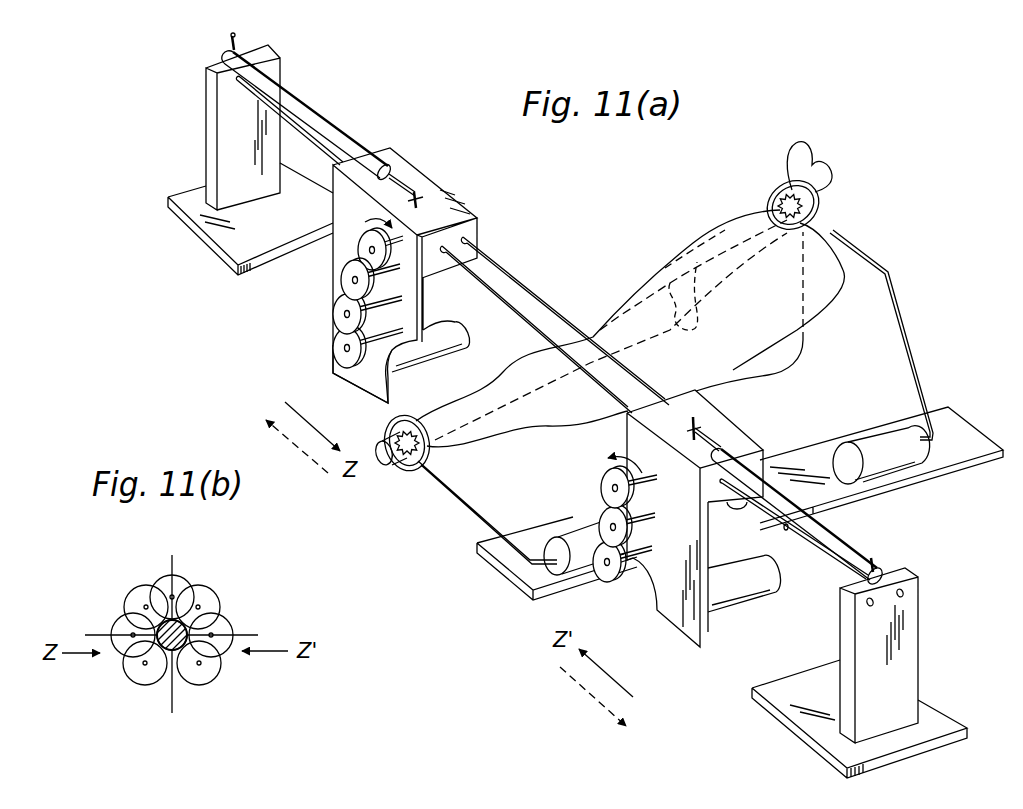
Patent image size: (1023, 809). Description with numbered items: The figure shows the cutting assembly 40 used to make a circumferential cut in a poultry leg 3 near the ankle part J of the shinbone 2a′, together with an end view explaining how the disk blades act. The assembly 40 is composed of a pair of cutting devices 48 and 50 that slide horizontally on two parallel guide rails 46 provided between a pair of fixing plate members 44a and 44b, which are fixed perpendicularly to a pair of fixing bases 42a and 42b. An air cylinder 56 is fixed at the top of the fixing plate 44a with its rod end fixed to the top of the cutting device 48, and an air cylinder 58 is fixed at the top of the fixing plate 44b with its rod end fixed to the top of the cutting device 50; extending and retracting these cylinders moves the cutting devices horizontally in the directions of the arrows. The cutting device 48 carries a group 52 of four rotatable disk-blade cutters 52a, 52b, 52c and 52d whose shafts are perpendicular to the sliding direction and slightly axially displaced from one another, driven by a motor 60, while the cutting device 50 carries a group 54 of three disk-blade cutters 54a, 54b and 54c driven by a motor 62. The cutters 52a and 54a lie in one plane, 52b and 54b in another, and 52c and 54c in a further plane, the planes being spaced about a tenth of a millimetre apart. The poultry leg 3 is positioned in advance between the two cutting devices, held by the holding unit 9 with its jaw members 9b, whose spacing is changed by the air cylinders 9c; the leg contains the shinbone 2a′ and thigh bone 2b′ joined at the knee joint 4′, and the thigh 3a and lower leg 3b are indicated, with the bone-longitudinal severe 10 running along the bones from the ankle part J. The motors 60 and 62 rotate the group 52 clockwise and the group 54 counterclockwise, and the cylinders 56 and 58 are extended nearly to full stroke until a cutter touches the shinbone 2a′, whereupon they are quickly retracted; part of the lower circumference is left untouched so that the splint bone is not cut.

In FIG. 11A, the cutting assembly 40 is at (482, 194).
In FIG. 11A, the fixing base 42a is at (257, 245).
In FIG. 11A, the fixing base 42b is at (777, 690).
In FIG. 11A, the fixing plate member 44a is at (206, 130).
In FIG. 11A, the fixing plate member 44b is at (910, 622).
In FIG. 11A, the guide rails 46 is at (517, 312).
In FIG. 11A, the cutting device 48 is at (355, 376).
In FIG. 11A, the cutting device 50 is at (678, 622).
In FIG. 11A, the disk-blade cutter group 52 is at (336, 293).
In FIG. 11B, the disk-blade cutter group 52 is at (106, 596).
In FIG. 11A, the disk-blade cutter 52a is at (363, 242).
In FIG. 11B, the disk-blade cutter 52a is at (130, 671).
In FIG. 11A, the disk-blade cutter 52b is at (338, 315).
In FIG. 11B, the disk-blade cutter 52b is at (115, 627).
In FIG. 11A, the disk-blade cutter 52c is at (342, 278).
In FIG. 11B, the disk-blade cutter 52c is at (135, 592).
In FIG. 11B, the disk-blade cutter 52d is at (160, 575).
In FIG. 11A, the disk-blade cutter group 54 is at (599, 483).
In FIG. 11B, the disk-blade cutter group 54 is at (239, 628).
In FIG. 11A, the disk-blade cutter 54a is at (610, 574).
In FIG. 11B, the disk-blade cutter 54a is at (207, 673).
In FIG. 11A, the disk-blade cutter 54b is at (628, 532).
In FIG. 11B, the disk-blade cutter 54b is at (222, 617).
In FIG. 11A, the disk-blade cutter 54c is at (628, 494).
In FIG. 11B, the disk-blade cutter 54c is at (207, 592).
In FIG. 11A, the air cylinder 56 is at (350, 145).
In FIG. 11A, the air cylinder 58 is at (840, 542).
In FIG. 11A, the motor 60 is at (442, 333).
In FIG. 11A, the motor 62 is at (758, 590).
In FIG. 11A, the poultry leg 3 is at (636, 280).
In FIG. 11A, the thigh 3a is at (697, 258).
In FIG. 11A, the lower leg 3b is at (777, 360).
In FIG. 11A, the knee joint 4′ is at (685, 318).
In FIG. 11A, the tibia (shinbone) 2a′ is at (440, 430).
In FIG. 11B, the tibia (shinbone) 2a′ is at (167, 653).
In FIG. 11A, the thigh bone 2b′ is at (773, 203).
In FIG. 11A, the holding unit 9 is at (867, 487).
In FIG. 11A, the jaw members 9b is at (820, 207).
In FIG. 11A, the air cylinders 9c is at (580, 563).
In FIG. 11A, the bone-longitudinal severe 10 is at (543, 363).
In FIG. 11A, the ankle part J is at (388, 435).